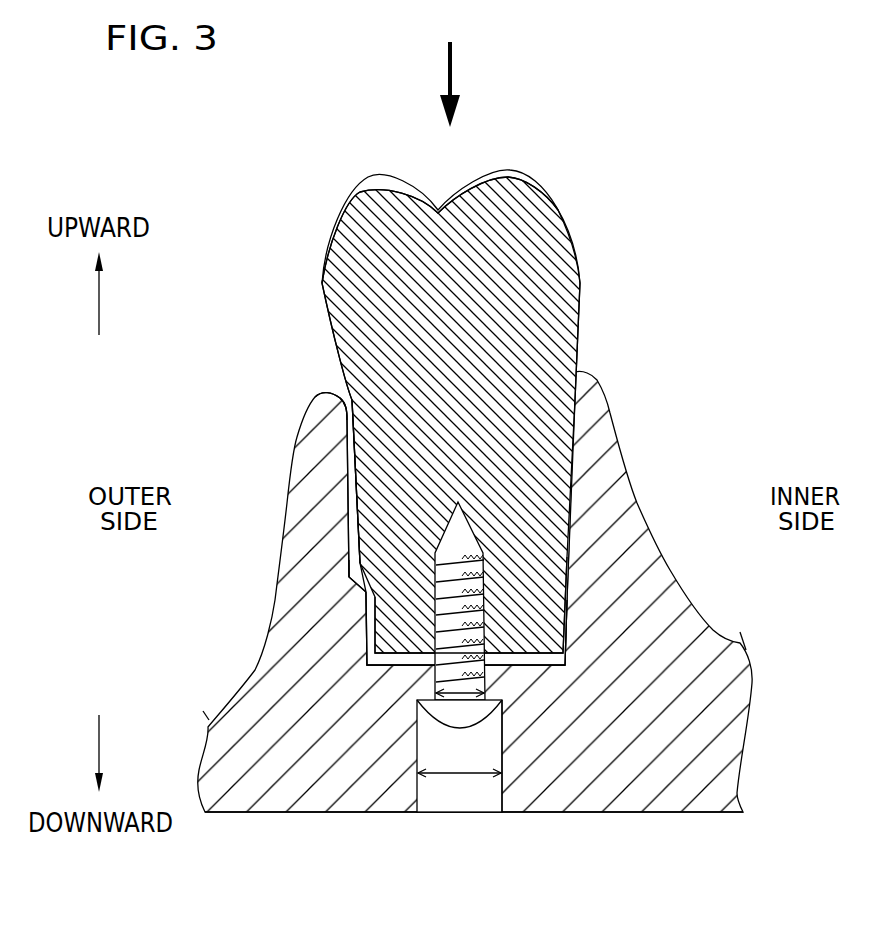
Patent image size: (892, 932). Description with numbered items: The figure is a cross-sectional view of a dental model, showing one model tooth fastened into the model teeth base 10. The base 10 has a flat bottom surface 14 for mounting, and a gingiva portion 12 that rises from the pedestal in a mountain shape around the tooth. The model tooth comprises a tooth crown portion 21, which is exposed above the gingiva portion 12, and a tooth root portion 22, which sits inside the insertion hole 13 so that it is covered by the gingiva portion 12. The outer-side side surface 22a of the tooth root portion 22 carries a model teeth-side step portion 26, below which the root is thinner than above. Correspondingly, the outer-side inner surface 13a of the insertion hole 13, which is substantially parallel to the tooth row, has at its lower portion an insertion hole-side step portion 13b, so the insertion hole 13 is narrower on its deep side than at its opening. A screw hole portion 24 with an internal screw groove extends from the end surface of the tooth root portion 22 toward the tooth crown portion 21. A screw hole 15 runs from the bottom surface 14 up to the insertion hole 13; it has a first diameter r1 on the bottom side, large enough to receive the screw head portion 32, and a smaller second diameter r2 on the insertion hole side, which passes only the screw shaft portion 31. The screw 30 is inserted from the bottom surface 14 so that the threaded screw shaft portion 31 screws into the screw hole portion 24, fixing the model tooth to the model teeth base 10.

The model teeth base 10 is at (710, 727).
The gingiva portion 12 is at (302, 515).
The insertion hole 13 is at (344, 487).
The inner surface 13a is at (343, 407).
The insertion hole-side step portion 13b is at (362, 583).
The bottom surface 14 is at (668, 813).
The screw hole 15 is at (502, 790).
The tooth crown portion 21 is at (560, 208).
The tooth root portion 22 is at (570, 458).
The side surface 22a is at (358, 473).
The screw hole portion 24 is at (477, 630).
The model teeth-side step portion 26 is at (367, 590).
The screw 30 is at (448, 727).
The screw shaft portion 31 is at (457, 572).
The screw head portion 32 is at (448, 712).
The first diameter r1 is at (448, 778).
The second diameter r2 is at (465, 692).